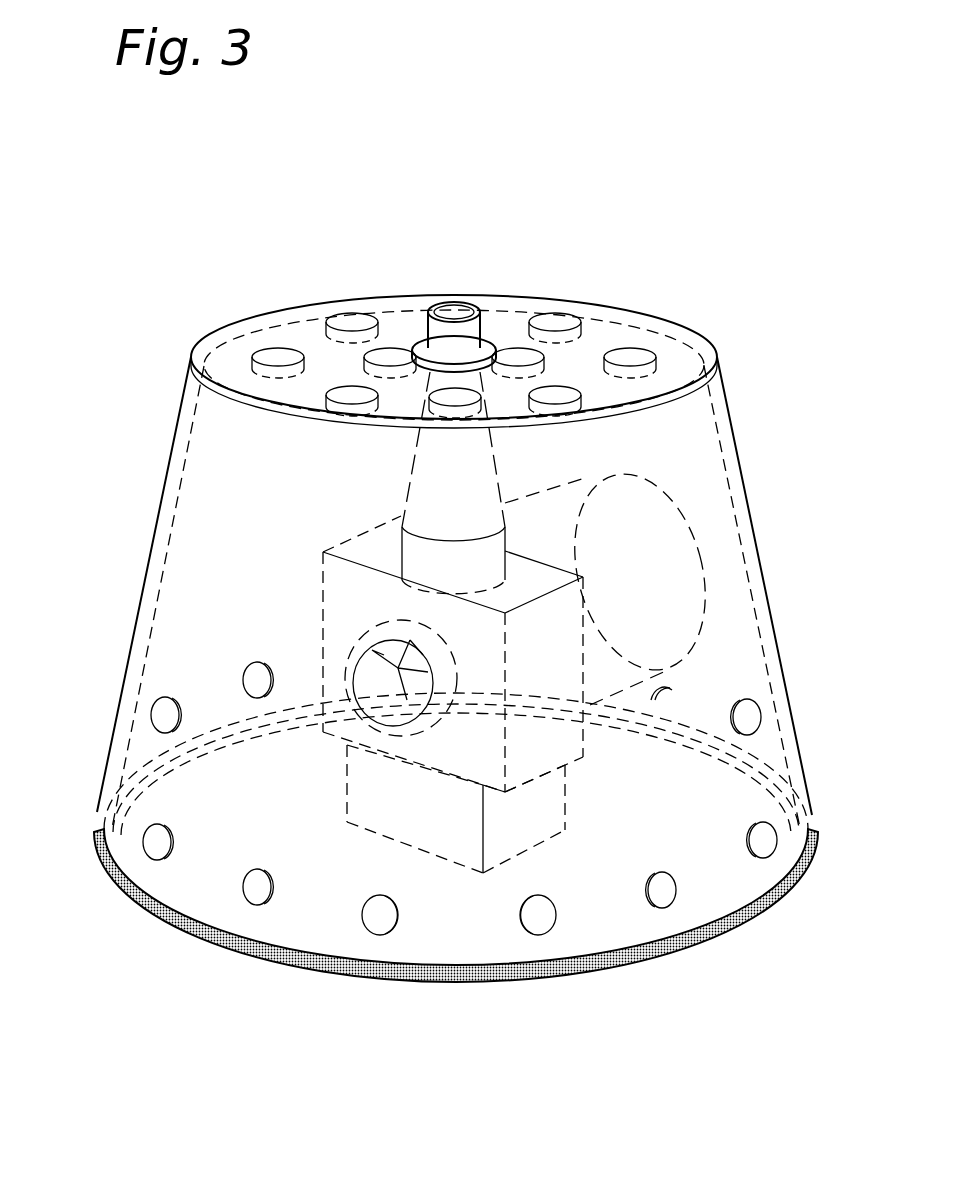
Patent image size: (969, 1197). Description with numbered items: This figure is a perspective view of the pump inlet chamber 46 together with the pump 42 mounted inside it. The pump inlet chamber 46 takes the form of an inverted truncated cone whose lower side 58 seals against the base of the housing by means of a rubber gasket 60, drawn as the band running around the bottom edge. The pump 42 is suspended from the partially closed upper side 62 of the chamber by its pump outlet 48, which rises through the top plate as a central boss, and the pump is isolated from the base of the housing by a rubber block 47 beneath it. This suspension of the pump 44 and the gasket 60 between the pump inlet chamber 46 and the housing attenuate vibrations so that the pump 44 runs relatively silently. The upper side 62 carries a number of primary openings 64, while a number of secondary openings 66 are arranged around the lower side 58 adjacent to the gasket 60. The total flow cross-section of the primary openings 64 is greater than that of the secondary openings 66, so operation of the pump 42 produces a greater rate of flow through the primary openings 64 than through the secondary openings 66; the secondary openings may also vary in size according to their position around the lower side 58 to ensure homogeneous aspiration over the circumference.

The pump 42 is at (652, 628).
The pump 44 is at (393, 712).
The pump inlet chamber 46 is at (752, 555).
The rubber block 47 is at (460, 830).
The pump outlet 48 is at (468, 328).
The lower side 58 is at (110, 784).
The rubber gasket 60 is at (147, 907).
The upper side 62 is at (682, 360).
The primary openings 64 is at (555, 322).
The secondary openings 66 is at (667, 892).